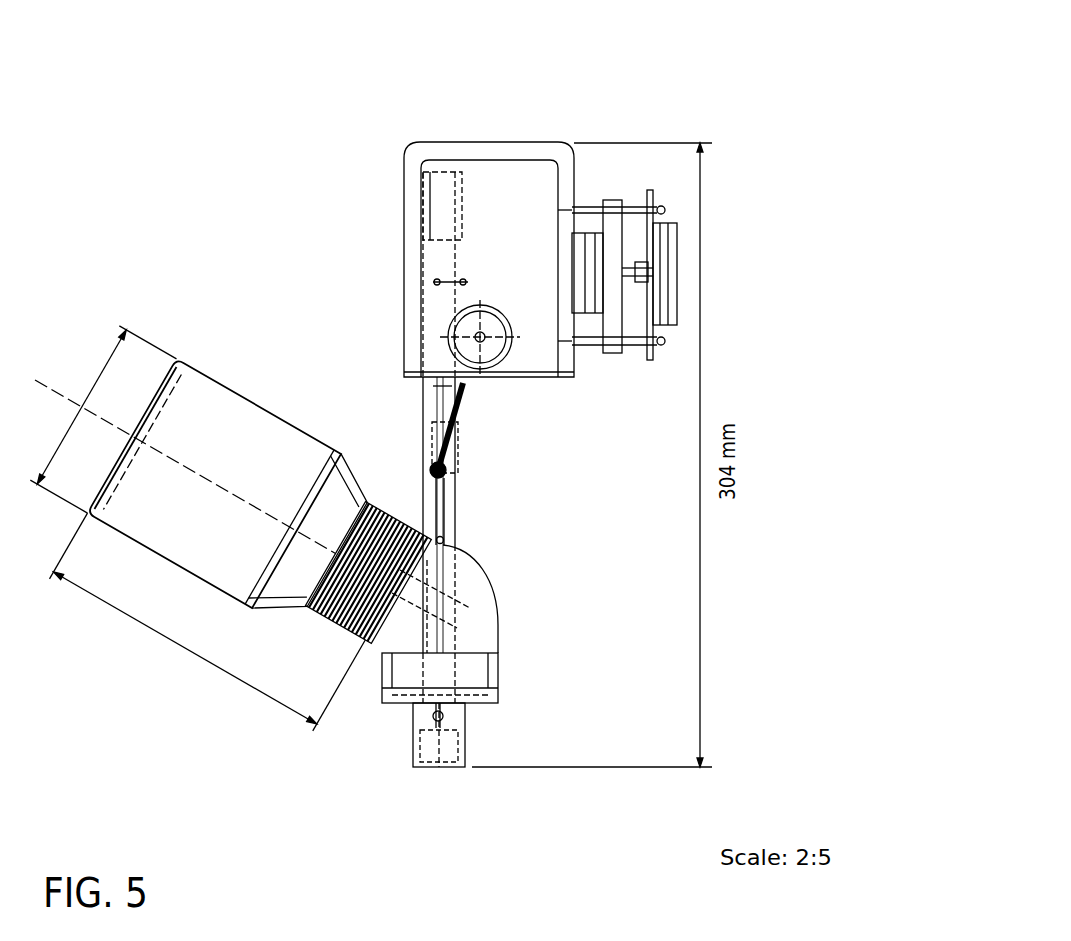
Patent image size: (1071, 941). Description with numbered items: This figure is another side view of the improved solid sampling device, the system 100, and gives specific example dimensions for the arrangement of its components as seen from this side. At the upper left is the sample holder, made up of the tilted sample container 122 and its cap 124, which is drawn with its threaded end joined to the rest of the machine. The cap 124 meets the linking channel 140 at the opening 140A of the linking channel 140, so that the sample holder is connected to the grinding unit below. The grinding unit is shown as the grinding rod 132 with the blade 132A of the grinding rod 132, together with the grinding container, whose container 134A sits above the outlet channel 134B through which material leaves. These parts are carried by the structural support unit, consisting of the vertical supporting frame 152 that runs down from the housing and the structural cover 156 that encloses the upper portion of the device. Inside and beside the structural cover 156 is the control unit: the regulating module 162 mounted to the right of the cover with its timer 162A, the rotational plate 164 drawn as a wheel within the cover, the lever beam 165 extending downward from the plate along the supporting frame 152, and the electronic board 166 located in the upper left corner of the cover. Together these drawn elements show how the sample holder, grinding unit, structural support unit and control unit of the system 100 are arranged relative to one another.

The system 100 is at (808, 60).
The sample container 122 is at (208, 407).
The cap 124 is at (320, 630).
The grinding rod 132 is at (440, 507).
The blade 132A is at (440, 715).
The container 134A is at (480, 693).
The outlet channel 134B is at (453, 755).
The linking channel 140 is at (482, 620).
The opening 140A is at (443, 541).
The supporting frame 152 is at (430, 407).
The structural cover 156 is at (490, 148).
The regulating module 162 is at (648, 220).
The timer 162A is at (667, 263).
The rotational plate 164 is at (494, 343).
The lever beam 165 is at (448, 440).
The electronic board 166 is at (435, 208).